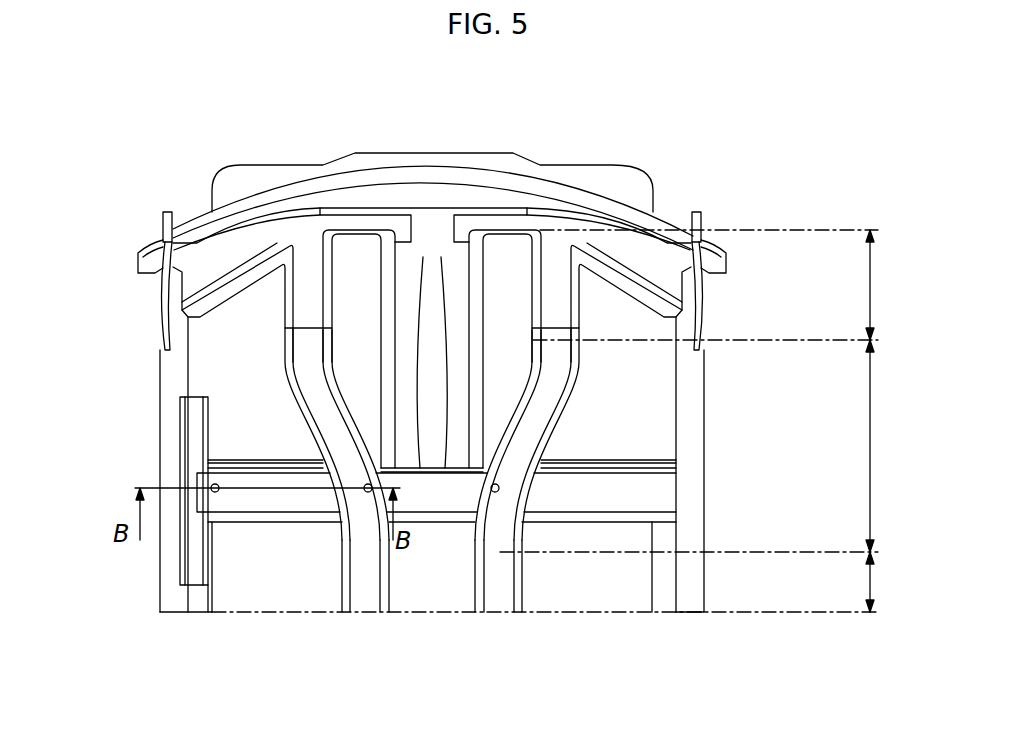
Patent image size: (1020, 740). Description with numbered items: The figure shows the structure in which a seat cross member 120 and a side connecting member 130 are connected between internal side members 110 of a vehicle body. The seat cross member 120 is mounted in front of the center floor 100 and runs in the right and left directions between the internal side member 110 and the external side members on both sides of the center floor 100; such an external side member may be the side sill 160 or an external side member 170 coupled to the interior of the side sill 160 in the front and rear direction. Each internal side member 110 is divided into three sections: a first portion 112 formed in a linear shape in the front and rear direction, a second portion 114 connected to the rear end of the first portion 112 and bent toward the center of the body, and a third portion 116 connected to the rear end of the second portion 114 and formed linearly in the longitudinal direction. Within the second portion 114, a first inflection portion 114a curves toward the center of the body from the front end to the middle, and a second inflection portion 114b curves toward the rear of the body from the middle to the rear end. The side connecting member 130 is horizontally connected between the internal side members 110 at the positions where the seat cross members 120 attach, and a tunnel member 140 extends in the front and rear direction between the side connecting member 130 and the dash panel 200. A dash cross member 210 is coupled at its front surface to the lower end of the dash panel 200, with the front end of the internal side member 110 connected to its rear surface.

The center floor 100 is at (616, 416).
The internal side member 110 is at (366, 586).
The first portion 112 is at (896, 285).
The second portion 114 is at (896, 446).
The first inflection portion 114a is at (557, 366).
The second inflection portion 114b is at (510, 484).
The third portion 116 is at (895, 582).
The seat cross member 120 is at (258, 498).
The side connecting member 130 is at (431, 496).
The tunnel member 140 is at (455, 272).
The side sill 160 is at (172, 375).
The external side member 170 is at (190, 440).
The dash panel 200 is at (368, 178).
The dash cross member 210 is at (232, 258).